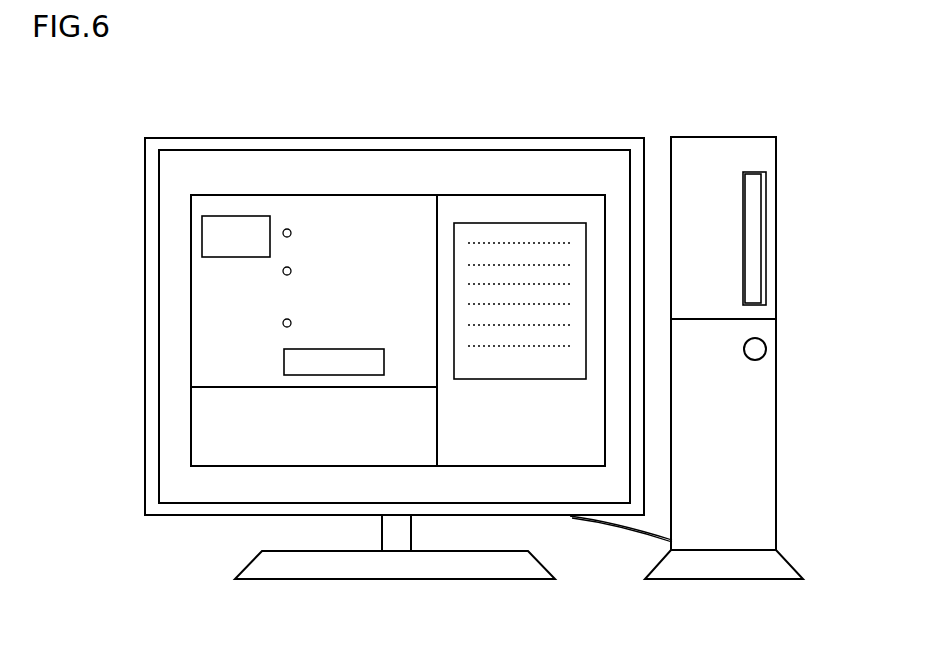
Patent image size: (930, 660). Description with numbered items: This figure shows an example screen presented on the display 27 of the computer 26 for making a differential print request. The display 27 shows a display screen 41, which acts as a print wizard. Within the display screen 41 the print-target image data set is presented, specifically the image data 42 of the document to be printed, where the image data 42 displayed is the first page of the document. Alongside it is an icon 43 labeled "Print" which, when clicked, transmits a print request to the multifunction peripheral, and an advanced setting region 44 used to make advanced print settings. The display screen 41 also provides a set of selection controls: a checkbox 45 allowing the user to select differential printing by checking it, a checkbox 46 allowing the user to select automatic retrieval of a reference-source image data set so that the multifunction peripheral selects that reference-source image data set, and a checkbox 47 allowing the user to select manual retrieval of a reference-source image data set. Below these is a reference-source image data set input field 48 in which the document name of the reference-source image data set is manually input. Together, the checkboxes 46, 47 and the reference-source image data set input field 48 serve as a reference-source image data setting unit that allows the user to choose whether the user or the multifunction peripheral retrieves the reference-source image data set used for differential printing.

The computer 26 is at (752, 137).
The display 27 is at (617, 138).
The display screen 41 is at (186, 202).
The image data 42 is at (537, 223).
The icon 43 is at (235, 216).
The advanced setting region 44 is at (191, 447).
The checkbox 45 is at (285, 210).
The checkbox 46 is at (278, 270).
The checkbox 47 is at (280, 323).
The reference-source image data set input field 48 is at (283, 365).